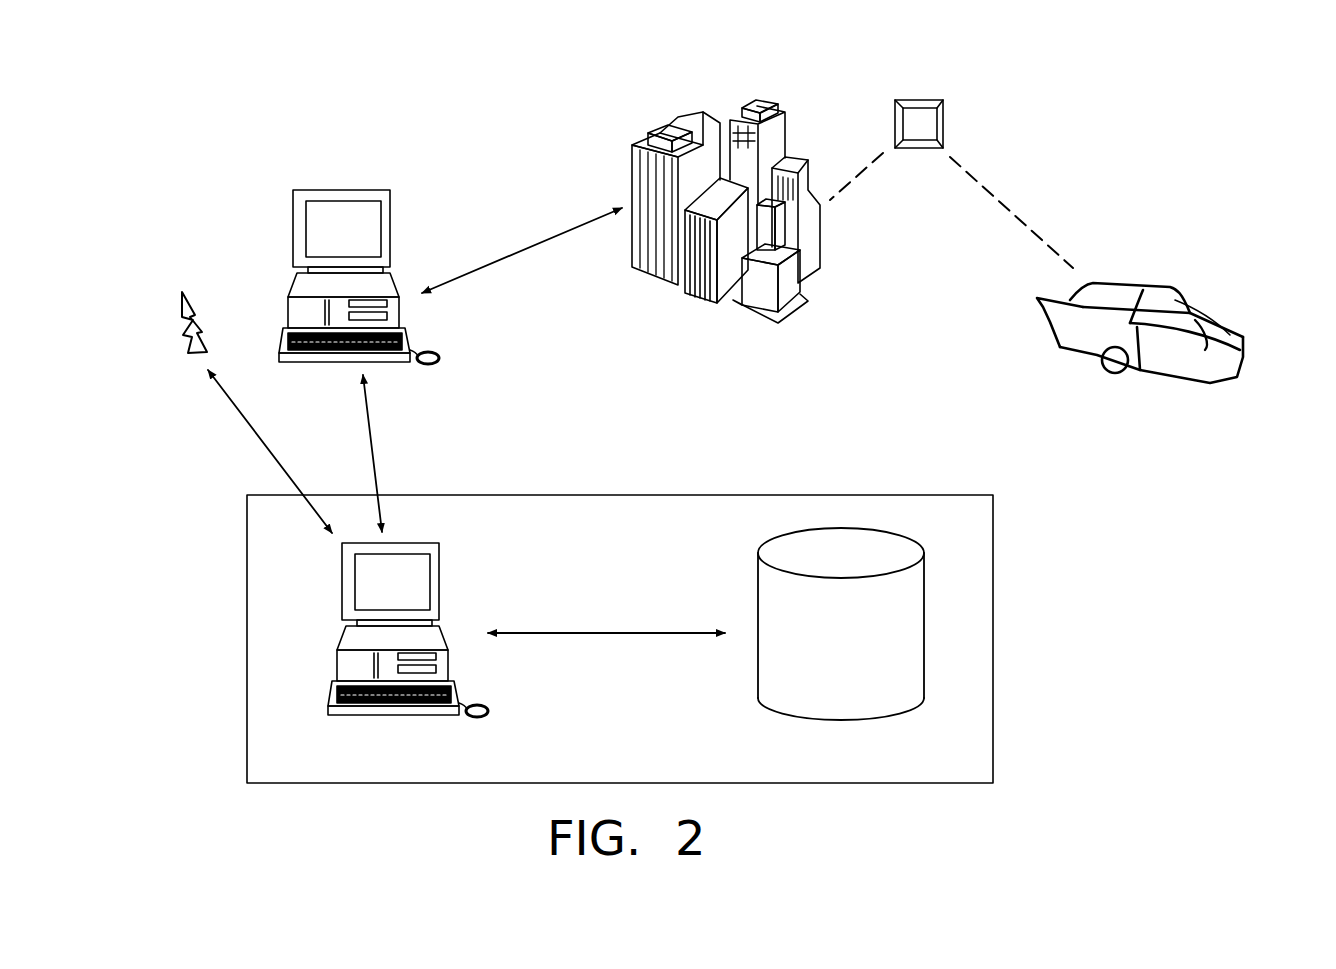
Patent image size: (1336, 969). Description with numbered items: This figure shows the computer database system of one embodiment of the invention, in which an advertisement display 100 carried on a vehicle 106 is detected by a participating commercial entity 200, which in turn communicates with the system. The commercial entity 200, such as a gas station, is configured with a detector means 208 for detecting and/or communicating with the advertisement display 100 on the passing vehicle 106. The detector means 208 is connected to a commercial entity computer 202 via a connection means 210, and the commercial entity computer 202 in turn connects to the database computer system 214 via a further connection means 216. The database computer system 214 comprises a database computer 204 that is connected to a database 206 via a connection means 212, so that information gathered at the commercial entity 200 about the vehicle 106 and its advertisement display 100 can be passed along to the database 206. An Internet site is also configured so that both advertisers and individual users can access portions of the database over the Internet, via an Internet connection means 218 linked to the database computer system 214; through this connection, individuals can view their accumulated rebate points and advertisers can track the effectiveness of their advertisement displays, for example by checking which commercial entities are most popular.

The advertisement display 100 is at (1188, 250).
The vehicle 106 is at (1207, 317).
The commercial entity 200 is at (675, 117).
The commercial entity computer 202 is at (355, 188).
The database computer 204 is at (440, 568).
The database 206 is at (757, 580).
The detector means 208 is at (914, 100).
The connection means 210 is at (497, 262).
The connection means 212 is at (563, 633).
The database computer system 214 is at (993, 582).
The connection means 216 is at (377, 457).
The Internet connection means 218 is at (185, 290).